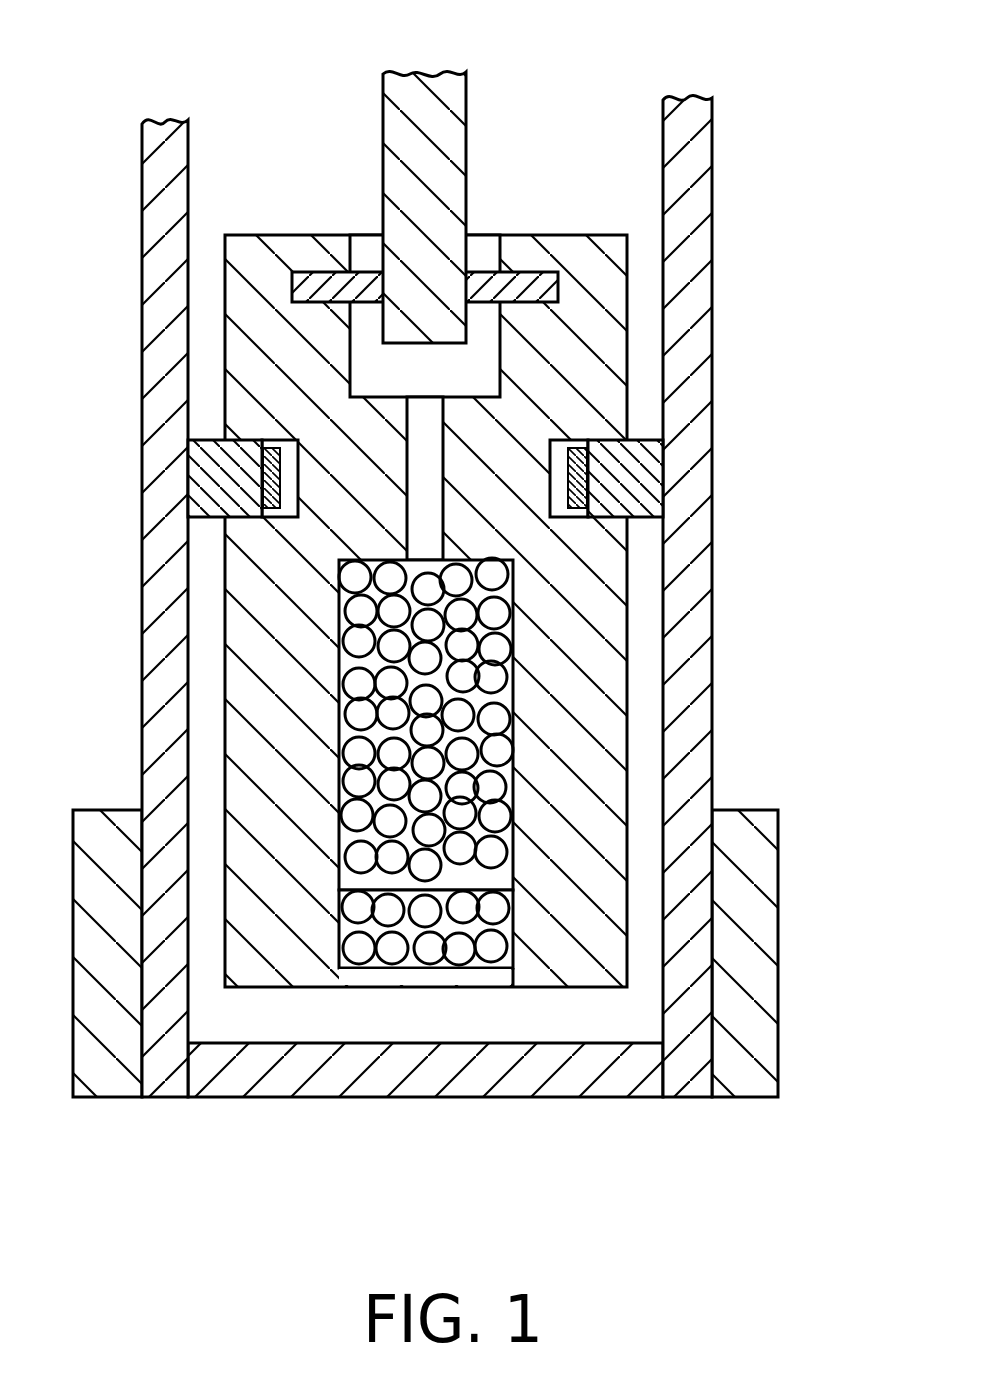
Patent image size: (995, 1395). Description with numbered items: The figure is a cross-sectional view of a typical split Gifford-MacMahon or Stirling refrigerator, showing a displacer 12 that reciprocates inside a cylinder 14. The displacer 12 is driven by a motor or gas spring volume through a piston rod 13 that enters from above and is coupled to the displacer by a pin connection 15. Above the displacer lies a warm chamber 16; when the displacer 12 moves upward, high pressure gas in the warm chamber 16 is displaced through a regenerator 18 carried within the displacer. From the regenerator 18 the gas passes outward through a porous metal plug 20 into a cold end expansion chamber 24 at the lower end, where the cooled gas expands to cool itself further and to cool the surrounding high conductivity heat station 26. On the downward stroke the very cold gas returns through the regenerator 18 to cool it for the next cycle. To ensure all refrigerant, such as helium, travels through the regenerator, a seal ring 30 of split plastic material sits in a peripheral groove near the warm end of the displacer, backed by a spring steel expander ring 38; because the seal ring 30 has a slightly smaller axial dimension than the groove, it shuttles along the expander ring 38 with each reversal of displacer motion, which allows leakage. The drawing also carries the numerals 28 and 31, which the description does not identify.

The displacer 12 is at (625, 672).
The piston rod 13 is at (383, 98).
The cylinder 14 is at (700, 205).
The pin connection 15 is at (483, 272).
The warm chamber 16 is at (213, 188).
The regenerator 18 is at (355, 750).
The porous metal plug 20 is at (365, 952).
The cold end expansion chamber 24 is at (547, 1022).
The heat station 26 is at (780, 993).
The left recess 28 is at (188, 480).
The seal ring 30 is at (638, 463).
The right recess 31 is at (558, 505).
The expander ring 38 is at (240, 440).